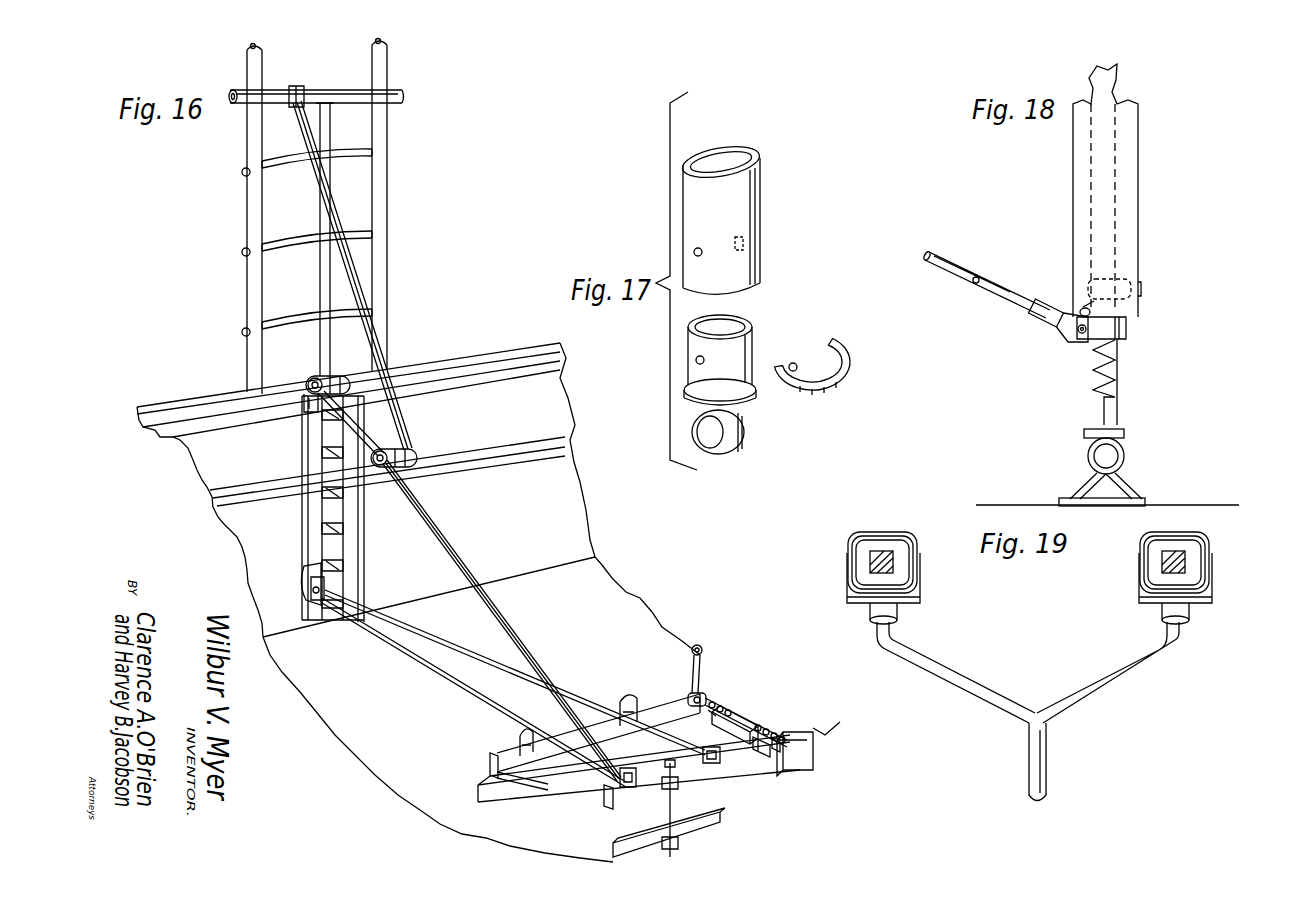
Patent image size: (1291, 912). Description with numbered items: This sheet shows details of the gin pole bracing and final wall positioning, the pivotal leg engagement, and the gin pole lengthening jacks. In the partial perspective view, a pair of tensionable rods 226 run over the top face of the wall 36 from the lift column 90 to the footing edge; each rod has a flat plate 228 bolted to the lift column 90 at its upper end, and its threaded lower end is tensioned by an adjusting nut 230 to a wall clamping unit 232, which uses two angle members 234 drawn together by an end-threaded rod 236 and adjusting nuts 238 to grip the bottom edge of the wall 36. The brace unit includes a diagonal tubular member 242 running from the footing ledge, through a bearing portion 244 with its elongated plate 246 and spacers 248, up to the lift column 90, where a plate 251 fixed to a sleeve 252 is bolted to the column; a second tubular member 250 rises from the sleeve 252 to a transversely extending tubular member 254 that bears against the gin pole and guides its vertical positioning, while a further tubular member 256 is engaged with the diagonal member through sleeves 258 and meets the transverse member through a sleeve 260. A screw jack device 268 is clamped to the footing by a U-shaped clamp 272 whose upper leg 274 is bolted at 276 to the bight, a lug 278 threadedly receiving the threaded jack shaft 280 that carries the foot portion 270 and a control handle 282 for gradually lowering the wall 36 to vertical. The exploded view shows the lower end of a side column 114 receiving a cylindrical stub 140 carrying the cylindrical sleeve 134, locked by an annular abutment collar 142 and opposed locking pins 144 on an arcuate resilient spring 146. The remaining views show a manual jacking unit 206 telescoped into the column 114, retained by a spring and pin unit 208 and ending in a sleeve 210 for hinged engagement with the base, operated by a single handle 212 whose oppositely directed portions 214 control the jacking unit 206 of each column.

In FIG. 16, the wall 36 is at (642, 594).
In FIG. 16, the lift column 90 is at (318, 500).
In FIG. 17, the side column 114 is at (753, 217).
In FIG. 18, the side column 114 is at (1117, 230).
In FIG. 17, the cylindrical sleeve 134 is at (738, 440).
In FIG. 17, the cylindrical stub 140 is at (753, 345).
In FIG. 17, the annular abutment collar 142 is at (753, 405).
In FIG. 17, the locking pins 144 is at (792, 362).
In FIG. 17, the arcuate resilient spring 146 is at (852, 376).
In FIG. 18, the manual jacking unit 206 is at (1140, 336).
In FIG. 19, the manual jacking unit 206 is at (1188, 543).
In FIG. 18, the spring and pin unit 208 is at (1141, 290).
In FIG. 18, the sleeve 210 is at (1124, 458).
In FIG. 18, the handle 212 is at (939, 254).
In FIG. 19, the handle 212 is at (1040, 756).
In FIG. 18, the oppositely directed portions 214 is at (1006, 303).
In FIG. 19, the oppositely directed portions 214 is at (962, 688).
In FIG. 16, the tensionable rods 226 is at (443, 648).
In FIG. 16, the flat plate 228 is at (320, 606).
In FIG. 16, the adjusting nut 230 is at (618, 780).
In FIG. 16, the wall clamping unit 232 is at (716, 781).
In FIG. 16, the angle members 234 is at (628, 796).
In FIG. 16, the end-threaded rod 236 is at (680, 797).
In FIG. 16, the adjusting nuts 238 is at (720, 836).
In FIG. 16, the tubular member 242 is at (530, 643).
In FIG. 16, the bearing portion 244 is at (512, 736).
In FIG. 16, the elongated plate 246 is at (640, 692).
In FIG. 16, the spacers 248 is at (517, 773).
In FIG. 16, the second tubular member 250 is at (330, 282).
In FIG. 16, the plate 251 is at (300, 403).
In FIG. 16, the sleeve 252 is at (321, 375).
In FIG. 16, the transversely extending tubular member 254 is at (348, 88).
In FIG. 16, the tubular member 256 is at (353, 288).
In FIG. 16, the sleeves 258 is at (403, 463).
In FIG. 16, the sleeve 260 is at (296, 90).
In FIG. 16, the screw jack device 268 is at (768, 704).
In FIG. 16, the foot portion 270 is at (803, 748).
In FIG. 16, the U-shaped clamp 272 is at (739, 701).
In FIG. 16, the upper leg 274 is at (707, 696).
In FIG. 16, the bolt 276 is at (720, 705).
In FIG. 16, the lug 278 is at (790, 712).
In FIG. 16, the threaded jack shaft 280 is at (797, 728).
In FIG. 16, the control handle 282 is at (690, 668).